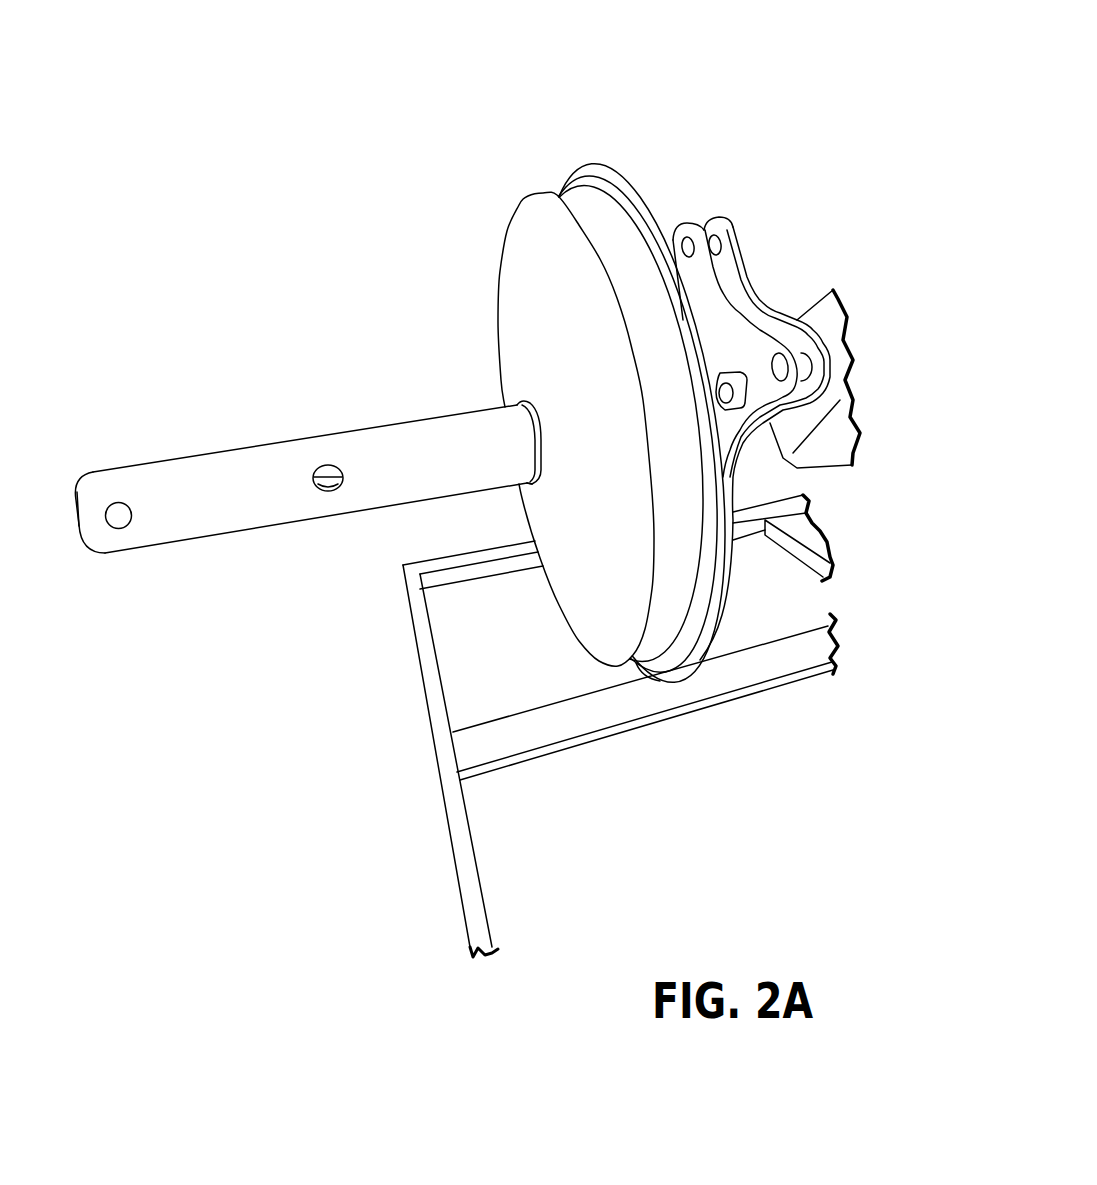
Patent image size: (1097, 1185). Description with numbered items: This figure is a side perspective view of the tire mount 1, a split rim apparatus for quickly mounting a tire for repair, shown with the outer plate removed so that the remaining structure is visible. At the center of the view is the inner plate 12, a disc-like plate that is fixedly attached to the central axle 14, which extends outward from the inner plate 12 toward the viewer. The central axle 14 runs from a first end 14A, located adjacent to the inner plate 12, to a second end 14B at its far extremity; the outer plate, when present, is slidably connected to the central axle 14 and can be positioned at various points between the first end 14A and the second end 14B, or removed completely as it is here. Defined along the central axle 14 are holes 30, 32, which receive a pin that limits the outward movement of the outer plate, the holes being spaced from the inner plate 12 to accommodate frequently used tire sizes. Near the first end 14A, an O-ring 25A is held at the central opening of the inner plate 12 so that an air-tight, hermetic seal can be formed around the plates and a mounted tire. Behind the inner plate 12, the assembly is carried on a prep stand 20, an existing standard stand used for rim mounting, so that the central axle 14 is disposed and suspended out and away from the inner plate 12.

The tire mount 1 is at (703, 133).
The inner plate 12 is at (597, 166).
The central axle 14 is at (207, 523).
The first end 14A is at (515, 402).
The second end 14B is at (88, 549).
The prep stand 20 is at (833, 440).
The O-ring 25A is at (526, 486).
The hole 30 is at (329, 493).
The hole 32 is at (118, 506).